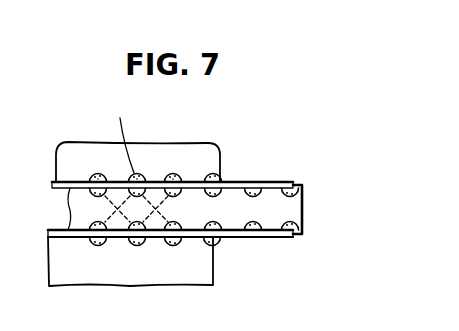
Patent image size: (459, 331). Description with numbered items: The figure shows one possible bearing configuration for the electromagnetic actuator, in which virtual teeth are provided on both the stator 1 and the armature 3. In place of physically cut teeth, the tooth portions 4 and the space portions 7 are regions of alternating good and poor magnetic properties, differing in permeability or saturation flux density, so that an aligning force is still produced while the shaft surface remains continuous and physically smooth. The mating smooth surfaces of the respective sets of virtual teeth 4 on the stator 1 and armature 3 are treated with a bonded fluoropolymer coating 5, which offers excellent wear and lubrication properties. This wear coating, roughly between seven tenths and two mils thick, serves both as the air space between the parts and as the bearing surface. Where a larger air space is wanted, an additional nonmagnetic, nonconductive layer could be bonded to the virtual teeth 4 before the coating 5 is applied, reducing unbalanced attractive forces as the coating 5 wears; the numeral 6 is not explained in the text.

The stator 1 is at (296, 211).
The armature 3 is at (73, 148).
The virtual teeth 4 is at (157, 181).
The bonded fluoropolymer coating 5 is at (220, 182).
The contact bumps 6 is at (257, 233).
The space portions 7 is at (125, 136).